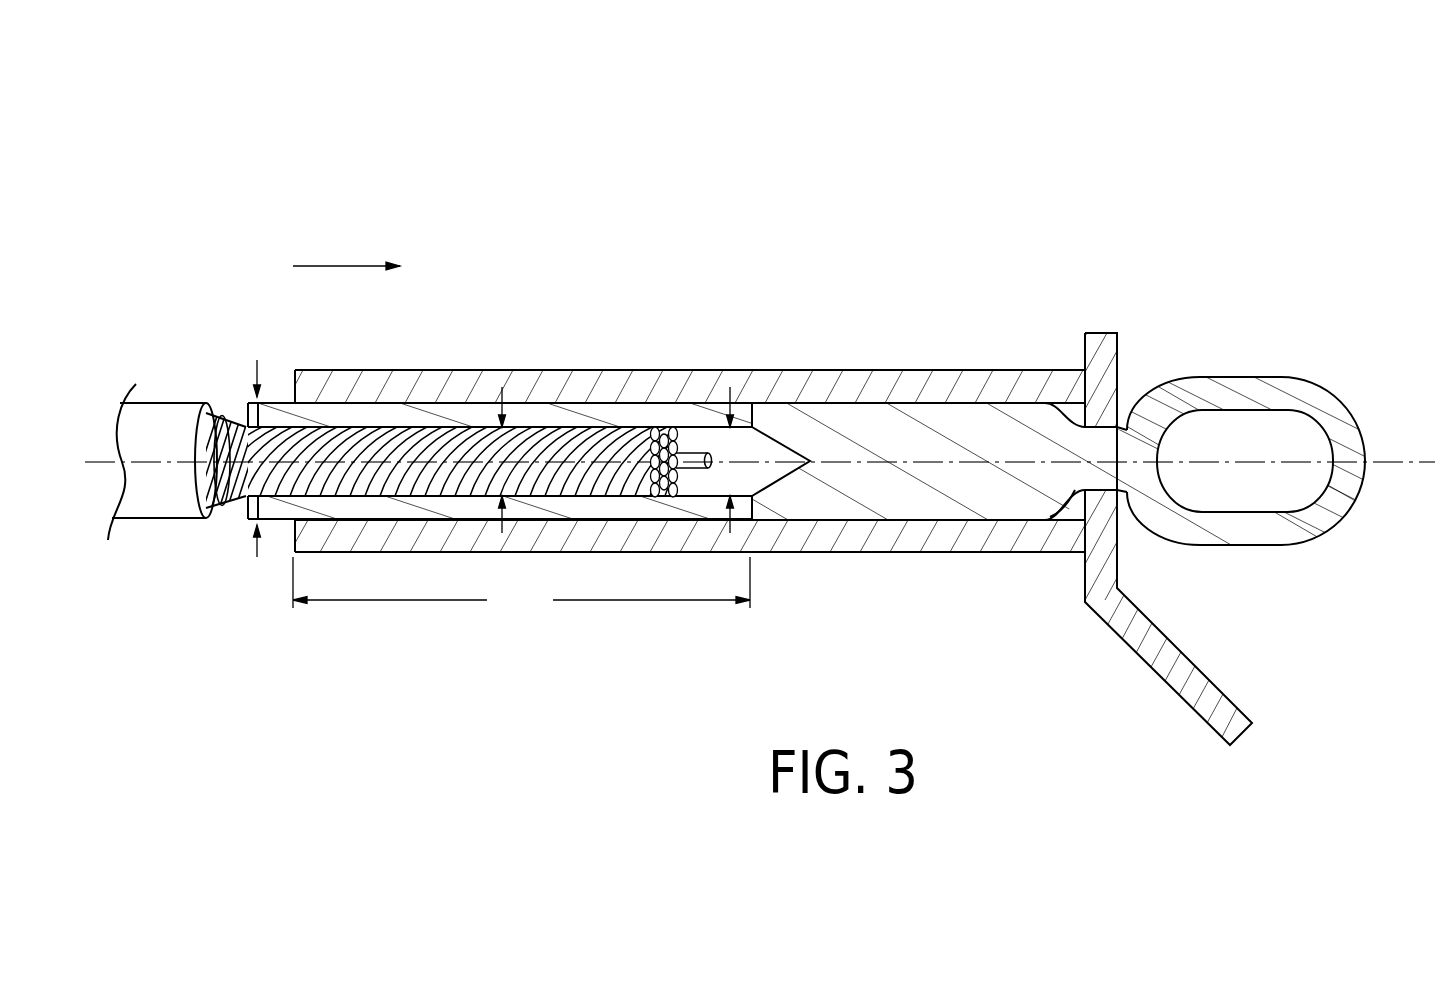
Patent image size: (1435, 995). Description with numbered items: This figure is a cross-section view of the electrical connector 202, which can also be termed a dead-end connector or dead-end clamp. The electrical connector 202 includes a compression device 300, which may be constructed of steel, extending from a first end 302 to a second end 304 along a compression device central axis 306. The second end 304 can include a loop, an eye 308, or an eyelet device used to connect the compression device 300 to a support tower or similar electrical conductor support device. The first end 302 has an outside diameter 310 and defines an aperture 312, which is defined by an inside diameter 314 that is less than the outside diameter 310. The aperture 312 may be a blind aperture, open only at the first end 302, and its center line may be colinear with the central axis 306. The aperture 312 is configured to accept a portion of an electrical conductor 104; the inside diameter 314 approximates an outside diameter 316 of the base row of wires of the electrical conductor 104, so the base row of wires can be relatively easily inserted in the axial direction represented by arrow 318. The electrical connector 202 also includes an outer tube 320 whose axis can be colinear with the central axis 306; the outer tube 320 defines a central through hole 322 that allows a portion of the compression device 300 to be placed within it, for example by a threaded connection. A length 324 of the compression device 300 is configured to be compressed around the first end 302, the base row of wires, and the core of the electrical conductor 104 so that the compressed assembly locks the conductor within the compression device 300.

The electrical conductor 104 is at (160, 519).
The electrical connector 202 is at (860, 227).
The compression device 300 is at (272, 403).
The first end 302 is at (275, 553).
The second end 304 is at (1157, 350).
The compression device central axis 306 is at (1417, 463).
The eye 308 is at (1318, 378).
The outside diameter 310 is at (246, 415).
The aperture 312 is at (218, 525).
The inside diameter 314 is at (733, 448).
The outside diameter of base row of wires 316 is at (497, 447).
The arrow 318 is at (335, 265).
The outer tube 320 is at (975, 370).
The central through hole 322 is at (1068, 517).
The length 324 is at (521, 586).